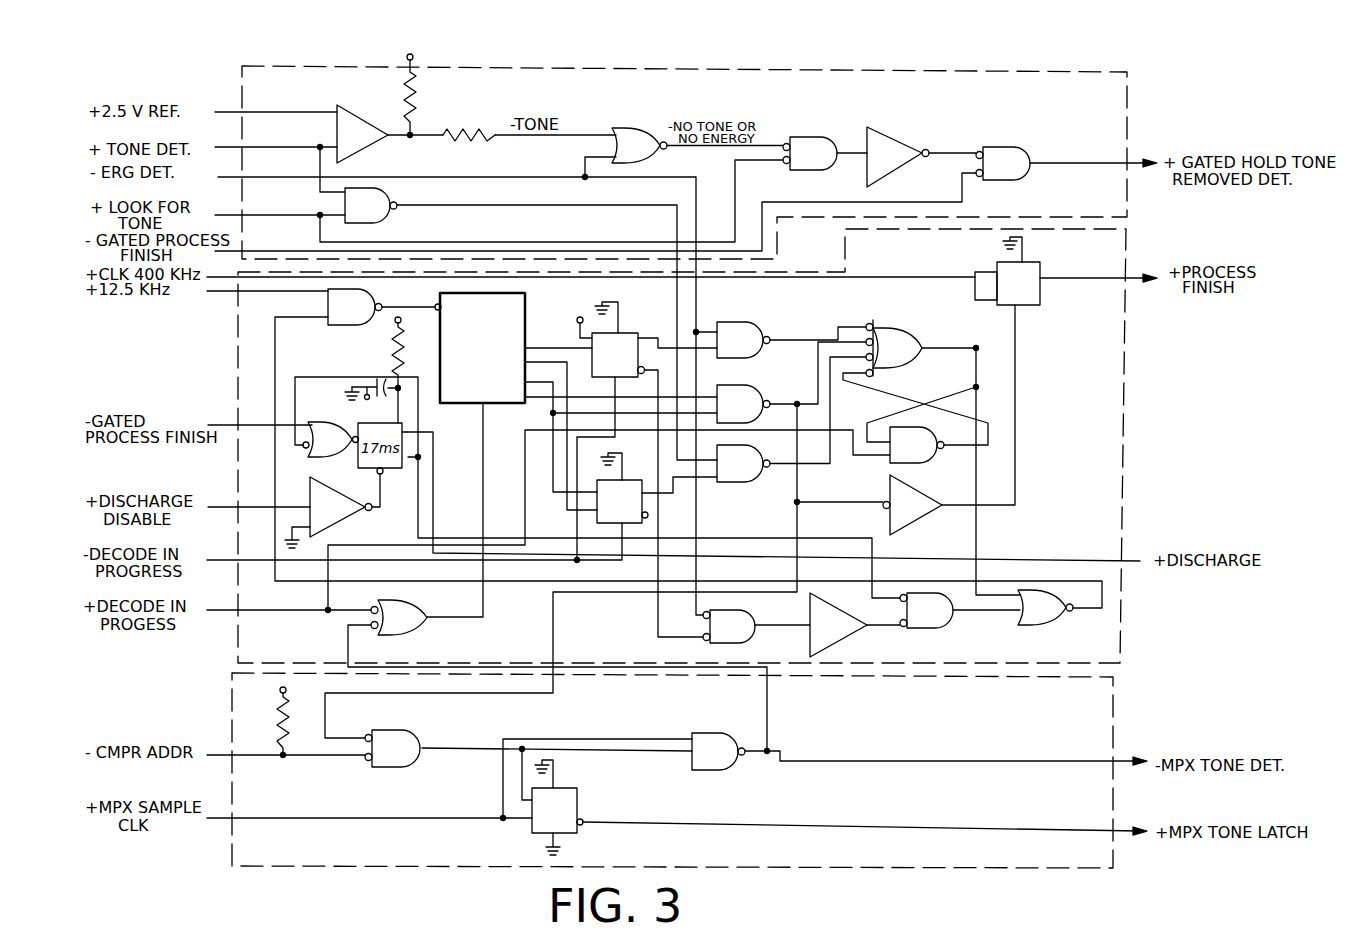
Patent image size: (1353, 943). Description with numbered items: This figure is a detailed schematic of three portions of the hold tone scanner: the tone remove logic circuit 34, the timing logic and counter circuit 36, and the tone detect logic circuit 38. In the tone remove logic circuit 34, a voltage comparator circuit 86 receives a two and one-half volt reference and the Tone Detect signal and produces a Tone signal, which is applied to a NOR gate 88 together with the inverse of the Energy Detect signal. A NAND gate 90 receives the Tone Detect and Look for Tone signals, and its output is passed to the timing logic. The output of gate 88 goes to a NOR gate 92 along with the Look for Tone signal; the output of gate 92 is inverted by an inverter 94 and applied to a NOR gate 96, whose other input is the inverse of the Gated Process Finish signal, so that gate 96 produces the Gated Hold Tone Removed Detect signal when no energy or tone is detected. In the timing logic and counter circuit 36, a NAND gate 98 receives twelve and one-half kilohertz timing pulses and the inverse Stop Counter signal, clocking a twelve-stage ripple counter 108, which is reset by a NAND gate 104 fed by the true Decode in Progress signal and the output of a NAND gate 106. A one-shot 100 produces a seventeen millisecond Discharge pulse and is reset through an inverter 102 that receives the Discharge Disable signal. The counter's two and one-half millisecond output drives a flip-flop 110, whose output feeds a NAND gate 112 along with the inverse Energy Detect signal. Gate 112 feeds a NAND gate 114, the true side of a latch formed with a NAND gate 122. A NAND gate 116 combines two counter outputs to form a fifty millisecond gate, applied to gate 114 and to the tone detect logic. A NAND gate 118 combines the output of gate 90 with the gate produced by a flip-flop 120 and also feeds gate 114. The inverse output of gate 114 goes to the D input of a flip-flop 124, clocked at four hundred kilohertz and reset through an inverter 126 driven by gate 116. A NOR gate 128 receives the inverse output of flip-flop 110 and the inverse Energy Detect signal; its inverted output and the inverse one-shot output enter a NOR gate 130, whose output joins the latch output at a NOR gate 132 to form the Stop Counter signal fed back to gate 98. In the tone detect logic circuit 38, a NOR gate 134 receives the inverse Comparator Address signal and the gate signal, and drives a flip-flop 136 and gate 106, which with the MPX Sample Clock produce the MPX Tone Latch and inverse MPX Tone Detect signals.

The tone remove logic circuit 34 is at (1082, 75).
The timing logic and counter circuit 36 is at (1122, 375).
The tone detect logic circuit 38 is at (1113, 727).
The voltage comparator circuit 86 is at (372, 124).
The NOR gate 88 is at (632, 128).
The NAND gate 90 is at (390, 195).
The NOR gate 92 is at (824, 137).
The inverter 94 is at (900, 141).
The NOR gate 96 is at (1022, 147).
The NAND gate 98 is at (351, 329).
The one-shot 100 is at (356, 458).
The inverter 102 is at (352, 520).
The NAND gate 104 is at (415, 635).
The NAND gate 106 is at (727, 770).
The 12-stage ripple counter 108 is at (527, 305).
The flip-flop 110 is at (632, 333).
The NAND gate 112 is at (752, 324).
The NAND gate 114 is at (917, 332).
The NAND gate 116 is at (758, 386).
The NAND gate 118 is at (747, 482).
The flip-flop 120 is at (627, 478).
The NAND gate 122 is at (923, 463).
The flip-flop 124 is at (1042, 305).
The inverter 126 is at (915, 530).
The NOR gate 128 is at (740, 643).
The NOR gate 130 is at (935, 628).
The NOR gate 132 is at (1048, 625).
The NOR gate 134 is at (410, 767).
The flip-flop 136 is at (580, 805).